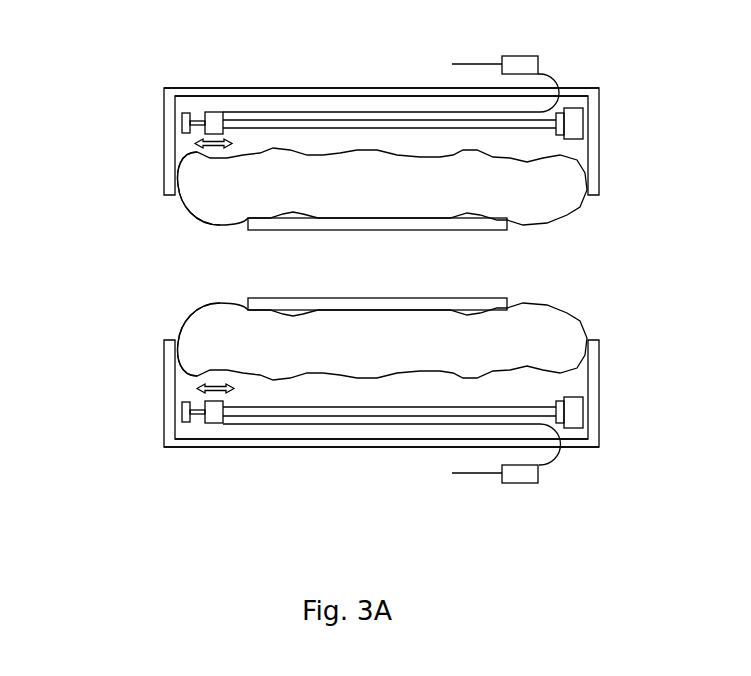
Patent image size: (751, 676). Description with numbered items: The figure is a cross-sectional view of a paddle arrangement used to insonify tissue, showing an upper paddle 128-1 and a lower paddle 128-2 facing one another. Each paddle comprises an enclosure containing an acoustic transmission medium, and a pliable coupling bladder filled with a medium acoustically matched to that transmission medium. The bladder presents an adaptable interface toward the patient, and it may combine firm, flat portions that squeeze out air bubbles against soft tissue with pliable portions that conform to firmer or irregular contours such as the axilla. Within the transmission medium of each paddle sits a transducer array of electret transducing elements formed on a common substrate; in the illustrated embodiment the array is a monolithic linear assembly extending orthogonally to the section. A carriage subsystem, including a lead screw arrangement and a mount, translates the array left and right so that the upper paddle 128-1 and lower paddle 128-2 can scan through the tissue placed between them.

The upper paddle 128-1 is at (672, 85).
The lower paddle 128-2 is at (672, 303).